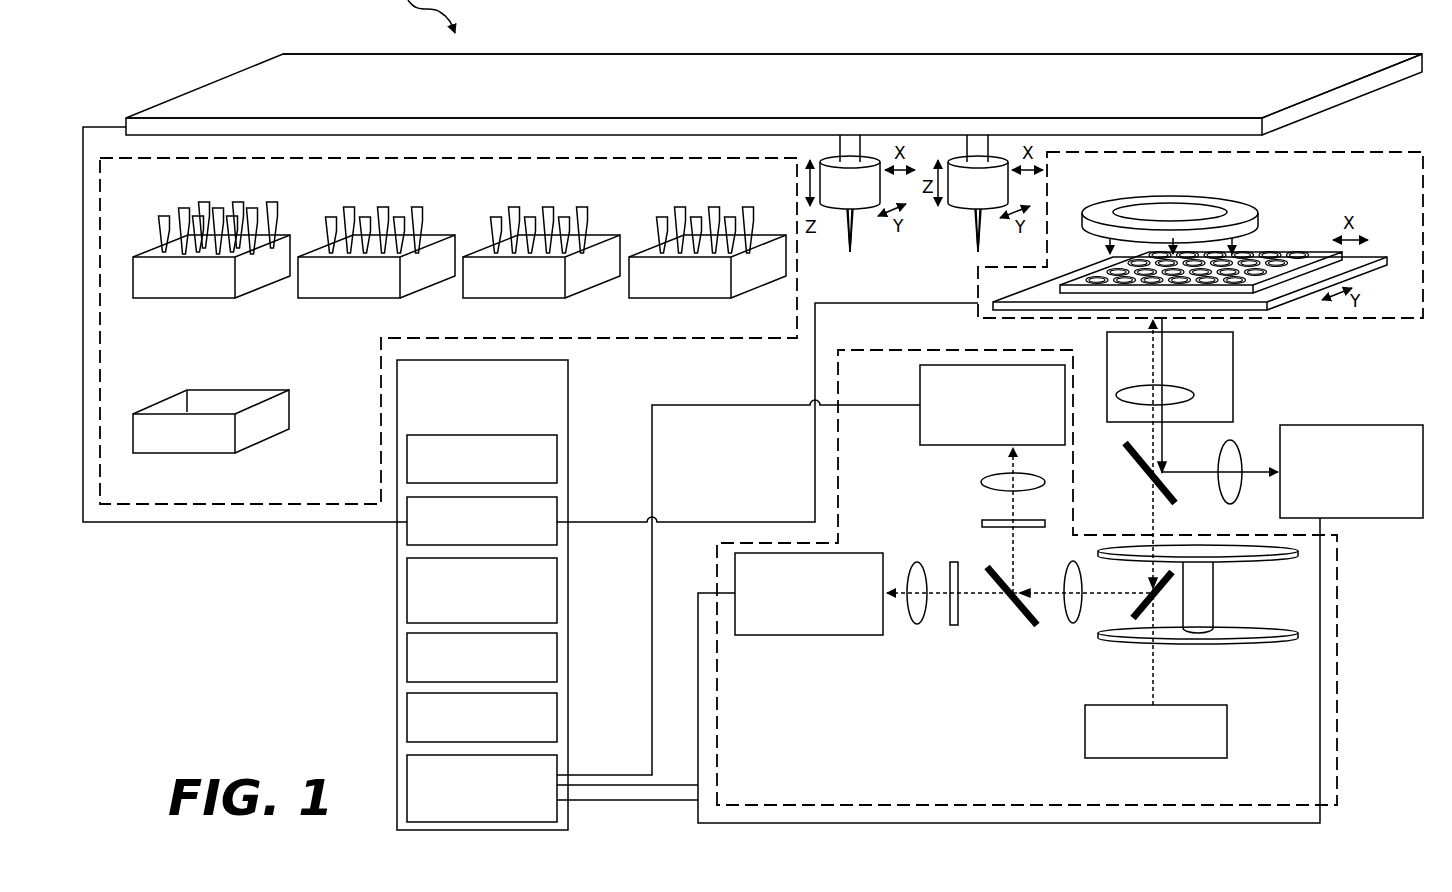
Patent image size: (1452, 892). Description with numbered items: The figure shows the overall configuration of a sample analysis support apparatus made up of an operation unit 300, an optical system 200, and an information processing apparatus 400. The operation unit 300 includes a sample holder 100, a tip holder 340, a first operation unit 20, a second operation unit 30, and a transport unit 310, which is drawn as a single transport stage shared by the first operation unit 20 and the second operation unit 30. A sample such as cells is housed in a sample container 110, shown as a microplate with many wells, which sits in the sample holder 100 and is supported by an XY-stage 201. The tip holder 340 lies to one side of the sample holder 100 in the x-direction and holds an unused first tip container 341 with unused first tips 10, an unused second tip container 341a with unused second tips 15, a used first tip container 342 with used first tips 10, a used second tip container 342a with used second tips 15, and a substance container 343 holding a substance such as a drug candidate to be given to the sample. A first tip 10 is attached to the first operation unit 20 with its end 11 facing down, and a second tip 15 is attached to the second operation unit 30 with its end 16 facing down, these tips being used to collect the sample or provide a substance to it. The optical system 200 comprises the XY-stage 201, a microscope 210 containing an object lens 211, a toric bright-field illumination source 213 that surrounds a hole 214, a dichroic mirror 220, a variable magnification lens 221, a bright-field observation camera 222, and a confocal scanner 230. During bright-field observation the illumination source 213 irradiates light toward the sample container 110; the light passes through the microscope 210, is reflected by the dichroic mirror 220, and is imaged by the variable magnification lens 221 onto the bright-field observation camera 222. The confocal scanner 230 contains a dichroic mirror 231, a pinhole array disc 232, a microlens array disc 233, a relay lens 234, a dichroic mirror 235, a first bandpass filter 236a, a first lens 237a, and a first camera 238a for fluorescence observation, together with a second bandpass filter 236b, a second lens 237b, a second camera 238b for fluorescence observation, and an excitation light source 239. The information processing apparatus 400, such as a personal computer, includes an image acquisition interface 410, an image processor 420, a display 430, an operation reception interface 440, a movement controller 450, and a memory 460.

The first tip 10 is at (528, 216).
The end of first tip 11 is at (860, 250).
The second tip 15 is at (736, 212).
The end of second tip 16 is at (952, 246).
The first operation unit 20 is at (856, 149).
The second operation unit 30 is at (984, 149).
The sample holder 100 is at (1200, 258).
The sample container 110 is at (1201, 242).
The optical system 200 is at (1377, 377).
The XY-stage 201 is at (1184, 283).
The microscope 210 is at (1201, 377).
The object lens 211 is at (1163, 420).
The bright-field illumination source 213 is at (1170, 203).
The hole 214 is at (1160, 192).
The dichroic mirror 220 is at (1129, 473).
The variable magnification lens 221 is at (1247, 459).
The bright-field observation camera 222 is at (1351, 497).
The confocal scanner 230 is at (1063, 577).
The dichroic mirror 231 is at (1128, 598).
The pinhole array disc 232 is at (1198, 572).
The microlens array disc 233 is at (1198, 658).
The relay lens 234 is at (1072, 617).
The dichroic mirror 235 is at (1012, 613).
The first bandpass filter 236a is at (958, 619).
The second bandpass filter 236b is at (976, 514).
The first lens 237a is at (900, 617).
The second lens 237b is at (976, 478).
The first camera for fluorescence observation 238a is at (809, 616).
The second camera for fluorescence observation 238b is at (957, 405).
The excitation light source 239 is at (1124, 731).
The operation unit 300 is at (774, 96).
The transport unit 310 is at (861, 83).
The tip holder 340 is at (448, 359).
The unused first tip container 341 is at (211, 283).
The used first tip container 342 is at (376, 283).
The unused second tip container 341a is at (541, 283).
The used second tip container 342a is at (707, 283).
The substance container 343 is at (244, 421).
The information processing apparatus 400 is at (512, 595).
The image acquisition interface 410 is at (482, 811).
The image processor 420 is at (517, 717).
The display 430 is at (517, 657).
The operation reception interface 440 is at (516, 590).
The movement controller 450 is at (513, 516).
The memory 460 is at (513, 459).